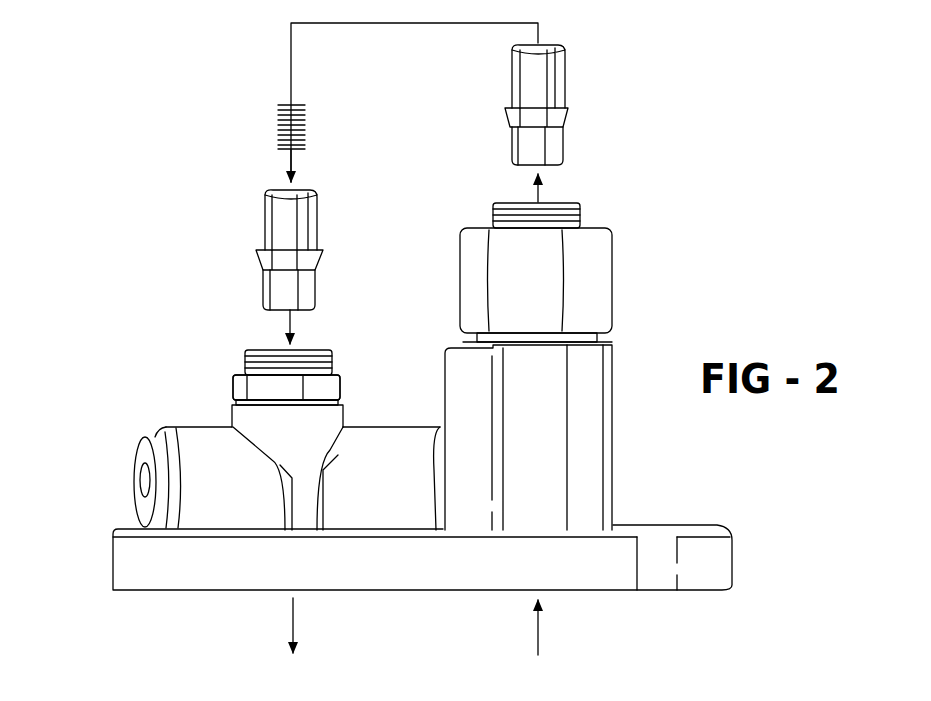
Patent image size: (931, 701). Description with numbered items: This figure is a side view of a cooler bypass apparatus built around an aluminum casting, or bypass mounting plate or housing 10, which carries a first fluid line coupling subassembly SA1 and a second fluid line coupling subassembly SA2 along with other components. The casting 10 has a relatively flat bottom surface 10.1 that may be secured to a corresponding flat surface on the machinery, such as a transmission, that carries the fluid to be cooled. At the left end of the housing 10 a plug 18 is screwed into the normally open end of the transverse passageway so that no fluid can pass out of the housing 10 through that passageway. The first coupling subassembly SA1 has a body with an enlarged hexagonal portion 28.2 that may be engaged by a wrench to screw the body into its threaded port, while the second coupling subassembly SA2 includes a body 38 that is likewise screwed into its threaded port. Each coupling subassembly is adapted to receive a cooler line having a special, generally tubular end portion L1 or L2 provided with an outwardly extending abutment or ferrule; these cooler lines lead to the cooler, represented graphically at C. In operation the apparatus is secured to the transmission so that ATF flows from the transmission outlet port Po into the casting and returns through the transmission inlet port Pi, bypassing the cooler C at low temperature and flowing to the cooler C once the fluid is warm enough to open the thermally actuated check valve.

The bypass mounting plate or housing 10 is at (389, 339).
The flat bottom surface 10.1 is at (237, 592).
The plug 18 is at (137, 455).
The first fluid line coupling subassembly SA1 is at (230, 360).
The enlarged portion 28.2 is at (333, 388).
The second fluid line coupling subassembly SA2 is at (581, 272).
The body 38 is at (543, 291).
The cooler line end portion L1 is at (580, 102).
The cooler line end portion L2 is at (323, 222).
The cooler C is at (268, 119).
The ATF inlet port Pi is at (297, 608).
The ATF outlet port Po is at (541, 634).